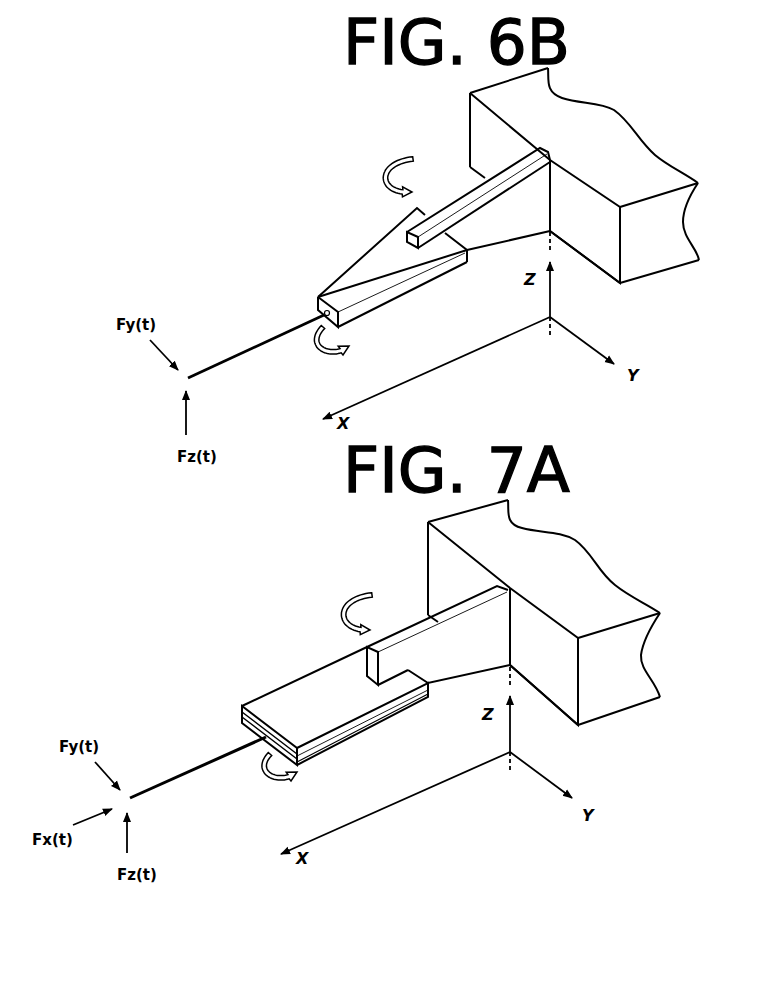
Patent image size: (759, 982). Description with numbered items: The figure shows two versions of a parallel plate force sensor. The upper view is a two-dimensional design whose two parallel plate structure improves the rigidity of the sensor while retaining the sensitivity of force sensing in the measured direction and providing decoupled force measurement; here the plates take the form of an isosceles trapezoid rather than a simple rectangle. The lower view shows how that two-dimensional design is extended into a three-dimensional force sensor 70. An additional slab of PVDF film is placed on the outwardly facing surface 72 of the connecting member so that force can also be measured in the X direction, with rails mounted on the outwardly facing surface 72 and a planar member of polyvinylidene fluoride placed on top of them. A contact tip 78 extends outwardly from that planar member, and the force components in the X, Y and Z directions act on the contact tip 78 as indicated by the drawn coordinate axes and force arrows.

The three-dimensional force sensor 70 is at (232, 586).
The outwardly facing surface 72 is at (242, 710).
The contact tip 78 is at (160, 787).